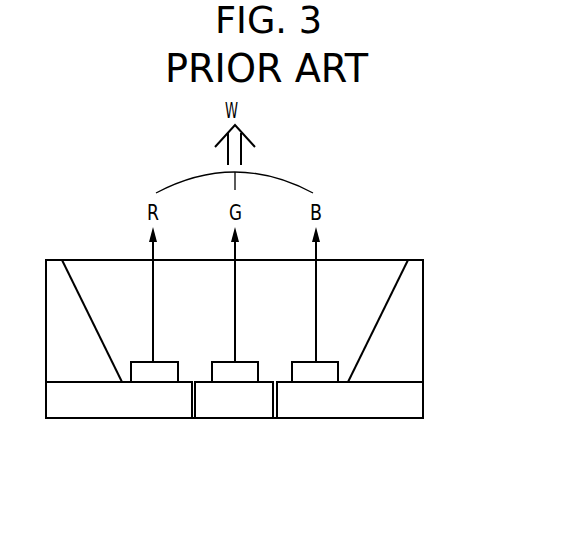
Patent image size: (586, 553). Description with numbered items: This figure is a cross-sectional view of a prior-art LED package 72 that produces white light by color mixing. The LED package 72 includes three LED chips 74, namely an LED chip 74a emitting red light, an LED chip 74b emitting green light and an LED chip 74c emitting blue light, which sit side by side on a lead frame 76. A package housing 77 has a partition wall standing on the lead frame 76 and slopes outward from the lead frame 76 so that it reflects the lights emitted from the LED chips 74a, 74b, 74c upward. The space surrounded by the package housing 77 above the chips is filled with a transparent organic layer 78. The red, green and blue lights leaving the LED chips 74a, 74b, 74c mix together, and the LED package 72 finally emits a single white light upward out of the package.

The LED package 72 is at (413, 214).
The LED chips 74 is at (255, 457).
The LED chip 74a is at (171, 375).
The LED chip 74b is at (253, 375).
The LED chip 74c is at (336, 434).
The lead frame 76 is at (137, 405).
The package housing 77 is at (395, 332).
The transparent organic layer 78 is at (113, 317).